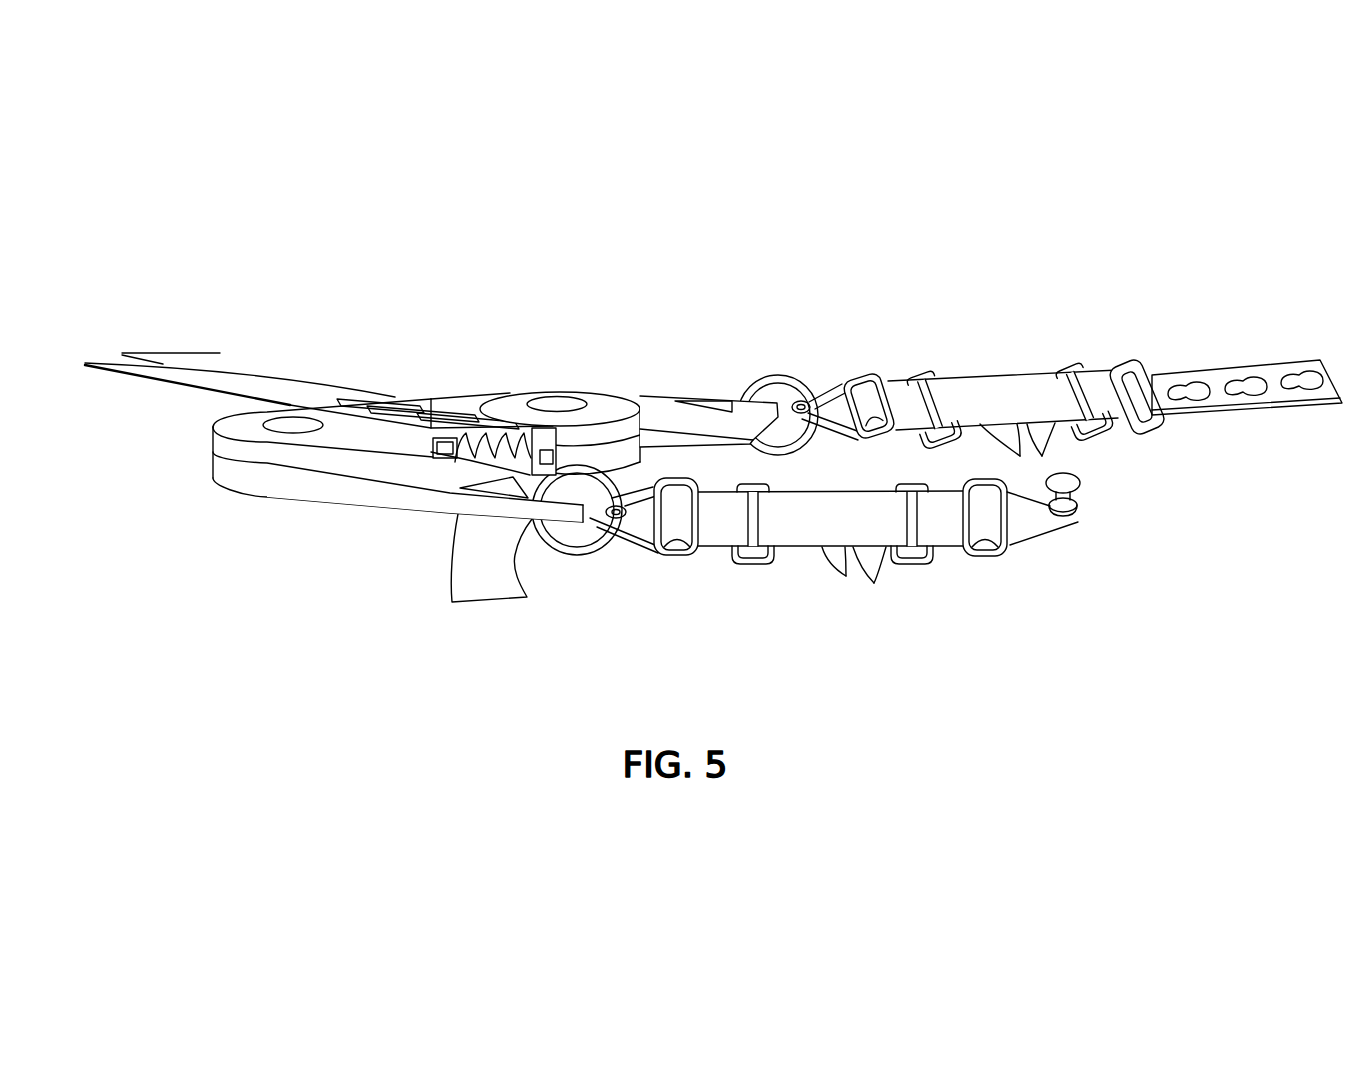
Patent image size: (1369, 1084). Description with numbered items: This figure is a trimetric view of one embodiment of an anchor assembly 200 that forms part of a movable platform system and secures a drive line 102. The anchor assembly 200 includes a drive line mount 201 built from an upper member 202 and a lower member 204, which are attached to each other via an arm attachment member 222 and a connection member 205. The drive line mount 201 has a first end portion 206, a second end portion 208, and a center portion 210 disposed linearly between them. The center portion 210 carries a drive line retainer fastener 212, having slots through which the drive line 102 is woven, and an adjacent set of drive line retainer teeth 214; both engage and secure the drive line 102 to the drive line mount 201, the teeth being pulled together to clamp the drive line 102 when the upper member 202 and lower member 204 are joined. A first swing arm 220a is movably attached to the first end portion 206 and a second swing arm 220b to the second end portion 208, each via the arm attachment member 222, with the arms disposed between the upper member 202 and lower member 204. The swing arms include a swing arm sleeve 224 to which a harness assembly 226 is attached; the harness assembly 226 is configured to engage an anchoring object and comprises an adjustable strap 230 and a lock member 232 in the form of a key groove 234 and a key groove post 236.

The anchor assembly 200 is at (851, 243).
The drive line 102 is at (192, 372).
The first end portion 206 is at (196, 440).
The lower member 204 is at (245, 480).
The first swing arm 220a is at (347, 476).
The center portion 210 is at (405, 381).
The drive line retainer fastener 212 is at (328, 400).
The drive line mount 201 is at (497, 389).
The drive line retainer teeth 214 is at (480, 447).
The upper member 202 is at (558, 397).
The arm attachment member 222 is at (614, 389).
The connection member 205 is at (554, 476).
The second swing arm 220b is at (768, 404).
The second end portion 208 is at (621, 388).
The swing arm sleeve 224 is at (719, 399).
The lock member 232 is at (1241, 349).
The key groove 234 is at (1243, 394).
The adjustable strap 230 is at (850, 528).
The harness assembly 226 is at (717, 558).
The key groove post 236 is at (1075, 481).